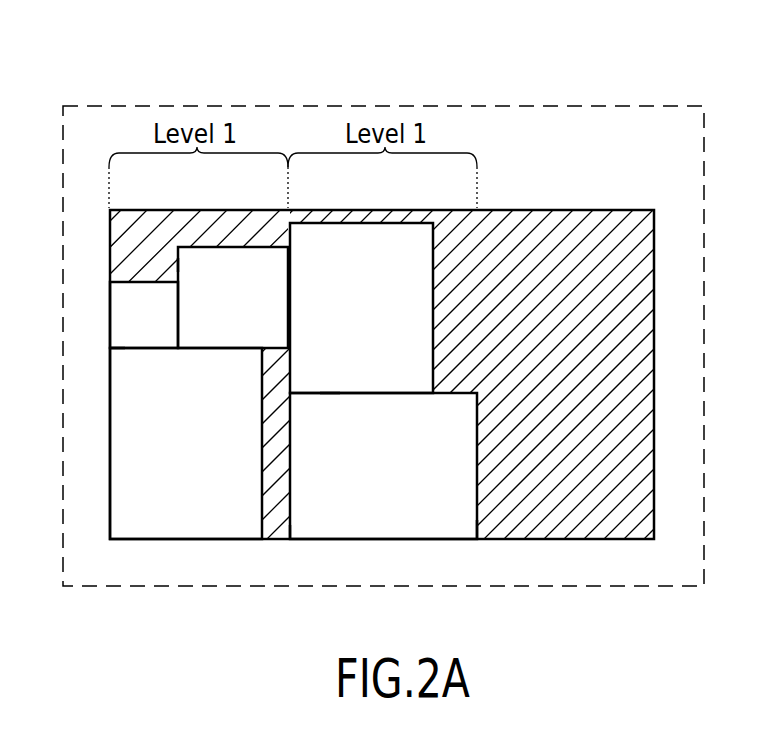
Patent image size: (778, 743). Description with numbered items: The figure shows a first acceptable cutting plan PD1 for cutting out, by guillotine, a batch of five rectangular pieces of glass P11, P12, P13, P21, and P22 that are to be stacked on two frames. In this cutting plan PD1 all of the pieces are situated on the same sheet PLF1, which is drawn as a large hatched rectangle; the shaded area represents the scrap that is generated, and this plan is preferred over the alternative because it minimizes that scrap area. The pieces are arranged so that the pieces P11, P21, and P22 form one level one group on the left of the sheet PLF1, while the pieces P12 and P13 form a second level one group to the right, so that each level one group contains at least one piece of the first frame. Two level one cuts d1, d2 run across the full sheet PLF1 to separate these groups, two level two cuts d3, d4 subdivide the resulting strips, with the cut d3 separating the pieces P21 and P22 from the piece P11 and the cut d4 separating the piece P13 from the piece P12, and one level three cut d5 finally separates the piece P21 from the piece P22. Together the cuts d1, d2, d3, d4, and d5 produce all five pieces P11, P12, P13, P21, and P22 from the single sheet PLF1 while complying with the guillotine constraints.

The cutting plan PD1 is at (358, 106).
The sheet PLF1 is at (565, 207).
The rectangular piece of glass P11 is at (208, 451).
The rectangular piece of glass P12 is at (403, 473).
The rectangular piece of glass P13 is at (382, 322).
The rectangular piece of glass P21 is at (162, 328).
The rectangular piece of glass P22 is at (248, 313).
The level 1 cut d1 is at (292, 525).
The level 1 cut d2 is at (477, 525).
The level 2 cut d3 is at (120, 349).
The level 2 cut d4 is at (328, 395).
The level 3 cut d5 is at (178, 265).